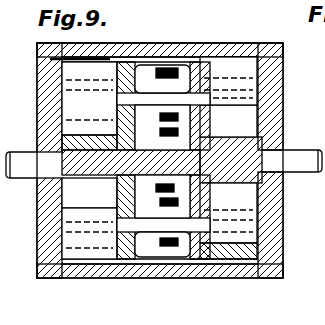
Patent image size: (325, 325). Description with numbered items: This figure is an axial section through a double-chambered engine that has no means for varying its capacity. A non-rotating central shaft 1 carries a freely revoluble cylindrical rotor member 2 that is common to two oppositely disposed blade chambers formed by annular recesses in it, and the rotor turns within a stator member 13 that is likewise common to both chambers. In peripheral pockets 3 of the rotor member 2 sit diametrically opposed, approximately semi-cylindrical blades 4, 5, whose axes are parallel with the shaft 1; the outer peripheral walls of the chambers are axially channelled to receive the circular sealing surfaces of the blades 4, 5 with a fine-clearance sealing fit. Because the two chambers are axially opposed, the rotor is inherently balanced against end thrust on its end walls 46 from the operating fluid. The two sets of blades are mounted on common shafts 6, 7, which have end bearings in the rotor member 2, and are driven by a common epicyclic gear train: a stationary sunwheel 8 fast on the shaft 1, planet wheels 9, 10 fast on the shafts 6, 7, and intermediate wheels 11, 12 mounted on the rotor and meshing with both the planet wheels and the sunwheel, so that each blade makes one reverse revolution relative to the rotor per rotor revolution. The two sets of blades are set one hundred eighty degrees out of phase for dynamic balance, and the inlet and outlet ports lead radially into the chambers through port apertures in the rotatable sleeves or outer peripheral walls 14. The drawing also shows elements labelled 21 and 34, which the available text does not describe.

The central shaft 1 is at (22, 178).
The rotor member 2 is at (159, 156).
The peripheral pockets 3 is at (160, 21).
The blade 4 is at (72, 113).
The blade 5 is at (236, 74).
The blade shaft 6 is at (154, 14).
The blade shaft 7 is at (158, 180).
The sunwheel 8 is at (165, 133).
The planet wheel 9 is at (171, 76).
The planet wheel 10 is at (165, 224).
The intermediate wheel 11 is at (175, 124).
The intermediate wheel 12 is at (177, 188).
The stator member 13 is at (225, 50).
The outer peripheral walls 14 is at (142, 58).
The shaft end 21 is at (292, 150).
The connecting rod 34 is at (100, 58).
The end walls 46 is at (178, 58).